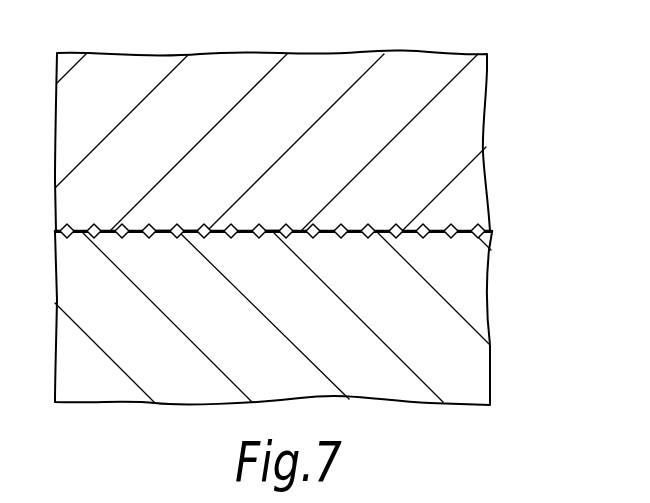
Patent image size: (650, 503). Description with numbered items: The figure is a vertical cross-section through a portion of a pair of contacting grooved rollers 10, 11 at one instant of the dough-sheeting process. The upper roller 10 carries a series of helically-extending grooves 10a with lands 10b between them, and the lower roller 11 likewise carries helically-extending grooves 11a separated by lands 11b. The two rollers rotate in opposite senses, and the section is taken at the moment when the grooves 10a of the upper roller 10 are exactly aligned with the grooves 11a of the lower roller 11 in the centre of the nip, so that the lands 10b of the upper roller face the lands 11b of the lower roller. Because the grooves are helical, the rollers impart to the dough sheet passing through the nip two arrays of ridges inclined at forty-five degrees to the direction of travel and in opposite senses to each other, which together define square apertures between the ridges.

The grooved roller 10 is at (488, 105).
The grooved roller 11 is at (482, 313).
The helically-extending grooves 10a is at (397, 231).
The lands 10b is at (163, 231).
The helically-extending grooves 11a is at (313, 235).
The lands 11b is at (268, 233).